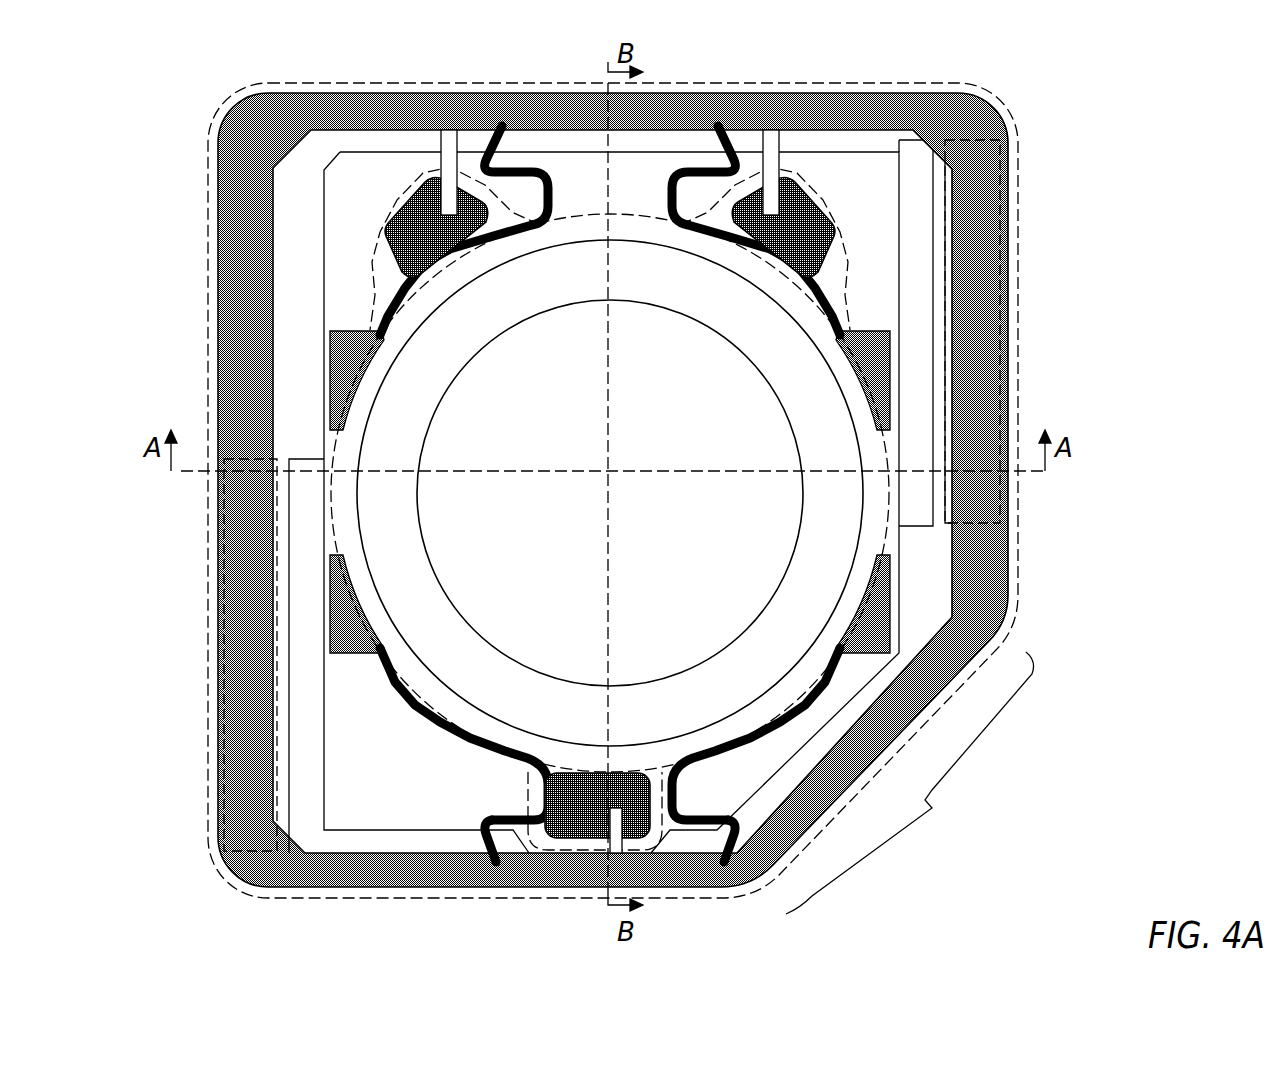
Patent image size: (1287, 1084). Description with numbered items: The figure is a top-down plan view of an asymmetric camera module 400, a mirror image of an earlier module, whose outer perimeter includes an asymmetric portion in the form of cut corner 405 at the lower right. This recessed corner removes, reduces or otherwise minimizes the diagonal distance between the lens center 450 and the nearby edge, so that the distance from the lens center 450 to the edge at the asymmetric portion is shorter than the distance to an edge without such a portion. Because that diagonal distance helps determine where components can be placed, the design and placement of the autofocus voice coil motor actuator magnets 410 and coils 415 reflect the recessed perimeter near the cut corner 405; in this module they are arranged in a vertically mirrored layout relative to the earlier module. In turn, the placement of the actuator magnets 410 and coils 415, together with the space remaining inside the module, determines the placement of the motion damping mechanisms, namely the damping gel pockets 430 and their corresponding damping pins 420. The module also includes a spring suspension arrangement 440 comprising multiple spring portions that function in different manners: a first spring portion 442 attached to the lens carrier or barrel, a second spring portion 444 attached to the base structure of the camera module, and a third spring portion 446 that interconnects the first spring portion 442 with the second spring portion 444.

The asymmetric camera module 400 is at (1046, 164).
The cut corner 405 is at (925, 800).
The VCM actuator magnet 410 is at (985, 267).
The coil 415 is at (915, 197).
The damping pin 420 is at (447, 135).
The damping gel pocket 430 is at (407, 210).
The spring suspension arrangement 440 is at (993, 555).
The first spring portion 442 is at (890, 625).
The second spring portion 444 is at (728, 864).
The third spring portion 446 is at (795, 700).
The lens center 450 is at (615, 479).